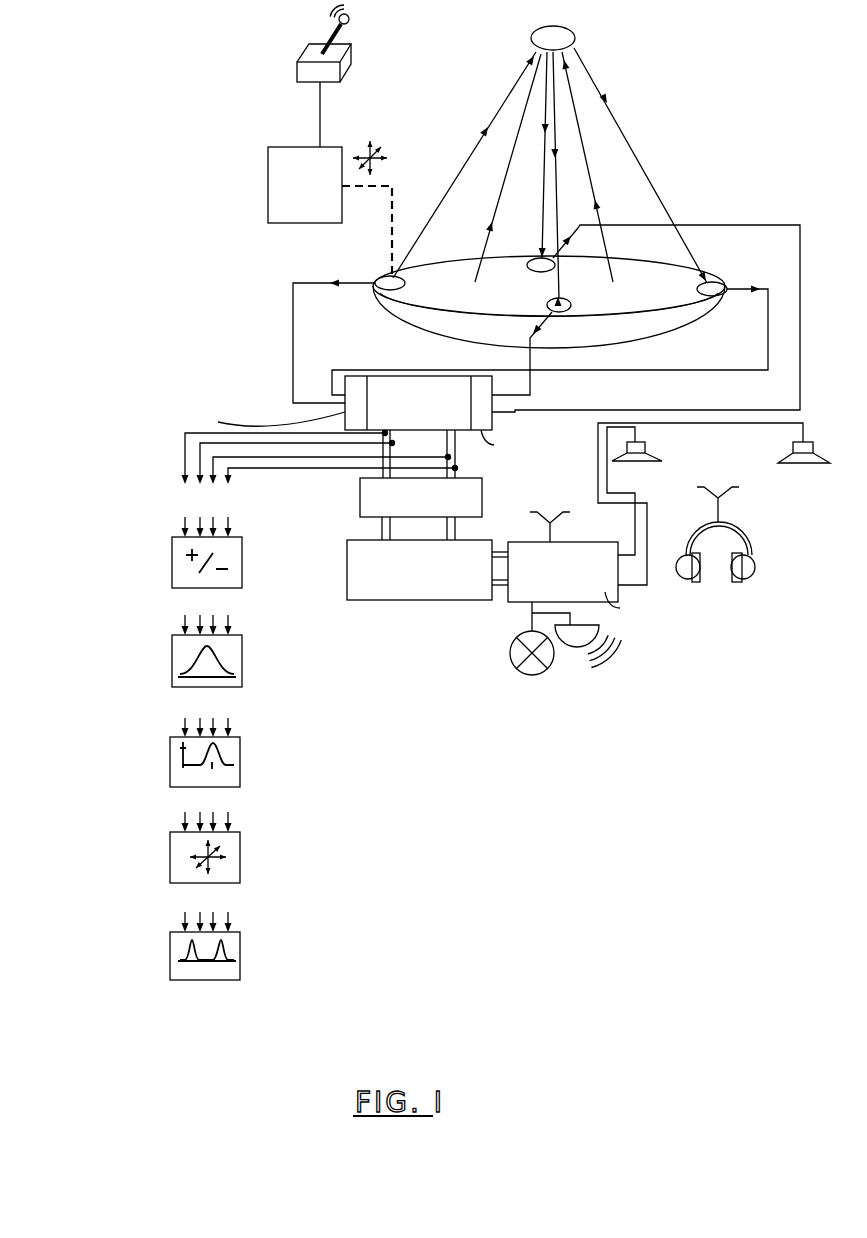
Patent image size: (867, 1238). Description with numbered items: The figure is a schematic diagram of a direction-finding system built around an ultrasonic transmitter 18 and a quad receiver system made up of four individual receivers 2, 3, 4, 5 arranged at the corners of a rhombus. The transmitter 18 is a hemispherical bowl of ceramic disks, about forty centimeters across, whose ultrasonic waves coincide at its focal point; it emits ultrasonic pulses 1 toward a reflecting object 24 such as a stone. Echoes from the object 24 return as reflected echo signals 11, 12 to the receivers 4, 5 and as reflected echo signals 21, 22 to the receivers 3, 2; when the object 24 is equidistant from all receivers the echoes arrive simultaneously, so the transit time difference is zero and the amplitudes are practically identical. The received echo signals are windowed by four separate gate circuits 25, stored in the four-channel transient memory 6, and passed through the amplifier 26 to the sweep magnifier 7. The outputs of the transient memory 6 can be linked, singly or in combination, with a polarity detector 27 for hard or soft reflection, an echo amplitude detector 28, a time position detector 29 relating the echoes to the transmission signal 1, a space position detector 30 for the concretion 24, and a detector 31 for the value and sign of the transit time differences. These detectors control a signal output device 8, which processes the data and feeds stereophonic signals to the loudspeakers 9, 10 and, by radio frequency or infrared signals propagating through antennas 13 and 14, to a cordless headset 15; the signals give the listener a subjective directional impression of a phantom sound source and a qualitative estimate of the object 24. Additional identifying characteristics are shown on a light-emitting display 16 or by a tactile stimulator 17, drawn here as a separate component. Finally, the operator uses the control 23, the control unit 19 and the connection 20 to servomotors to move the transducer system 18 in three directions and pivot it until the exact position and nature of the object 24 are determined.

The emitted ultrasonic pulses 1 is at (544, 167).
The receiver 2 is at (349, 333).
The receiver 3 is at (550, 331).
The receiver 4 is at (646, 318).
The receiver 5 is at (539, 345).
The four-channel transient memory 6 is at (445, 423).
The sweep magnifier 7 is at (419, 570).
The signal output device 8 is at (240, 958).
The loudspeaker 9 is at (635, 491).
The loudspeaker 10 is at (714, 504).
The reflected echo signal 11 is at (534, 155).
The reflected echo signal 12 is at (564, 179).
The antenna 13 is at (550, 517).
The antenna 14 is at (718, 495).
The headset 15 is at (725, 552).
The light-emitting display 16 is at (523, 638).
The tactile stimulator 17 is at (581, 641).
The ultrasonic transmitter 18 is at (549, 303).
The control unit 19 is at (239, 185).
The connection 20 is at (367, 231).
The reflected echo signal 21 is at (641, 165).
The reflected echo signal 22 is at (465, 165).
The control 23 is at (324, 76).
The reflecting object 24 is at (553, 28).
The gate circuit 25 is at (304, 404).
The amplifier 26 is at (421, 497).
The polarity detector 27 is at (215, 563).
The echo amplitude detector 28 is at (221, 663).
The time position detector 29 is at (219, 762).
The space position detector 30 is at (210, 858).
The transit time difference detector 31 is at (193, 964).